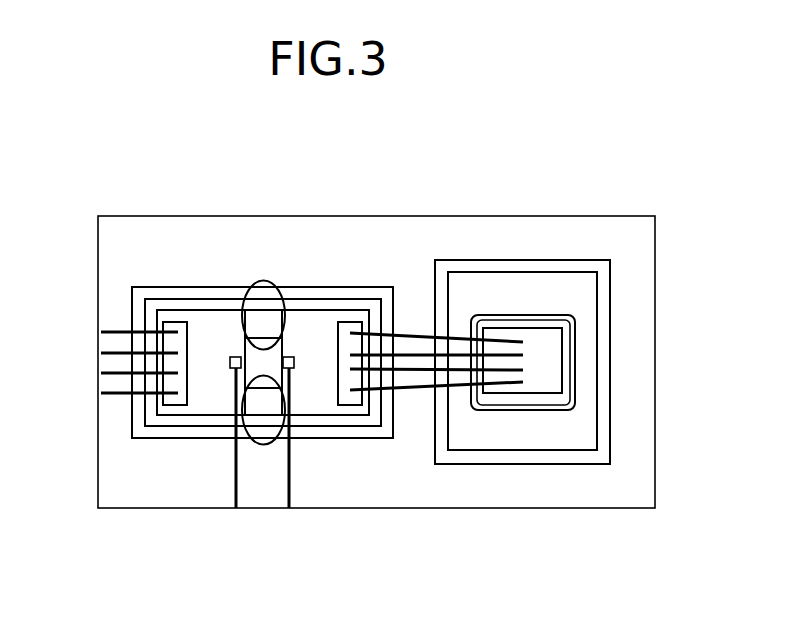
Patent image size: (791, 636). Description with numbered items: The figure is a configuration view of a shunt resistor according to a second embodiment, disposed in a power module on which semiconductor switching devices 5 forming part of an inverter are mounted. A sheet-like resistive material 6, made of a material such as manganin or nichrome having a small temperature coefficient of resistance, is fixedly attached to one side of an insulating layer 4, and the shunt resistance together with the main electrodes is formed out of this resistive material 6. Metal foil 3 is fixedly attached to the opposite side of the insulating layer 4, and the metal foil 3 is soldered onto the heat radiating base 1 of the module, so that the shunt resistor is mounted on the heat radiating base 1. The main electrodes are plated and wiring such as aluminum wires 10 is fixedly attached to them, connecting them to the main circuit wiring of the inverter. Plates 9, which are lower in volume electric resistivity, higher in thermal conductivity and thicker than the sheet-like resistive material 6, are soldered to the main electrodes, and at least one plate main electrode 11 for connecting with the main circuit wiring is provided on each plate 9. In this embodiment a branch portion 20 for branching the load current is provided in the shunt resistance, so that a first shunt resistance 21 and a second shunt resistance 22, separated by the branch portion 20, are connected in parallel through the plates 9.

The heat radiating base 1 is at (545, 485).
The metal foil 3 is at (580, 298).
The insulating layer 4 is at (132, 300).
The semiconductor switching device 5 is at (573, 403).
The sheet-like resistive material 6 is at (145, 321).
The plate 9 is at (205, 402).
The aluminum wire 10 is at (412, 391).
The plate main electrode 11 is at (343, 380).
The branch portion 20 is at (280, 357).
The first shunt resistance 21 is at (265, 280).
The second shunt resistance 22 is at (258, 445).